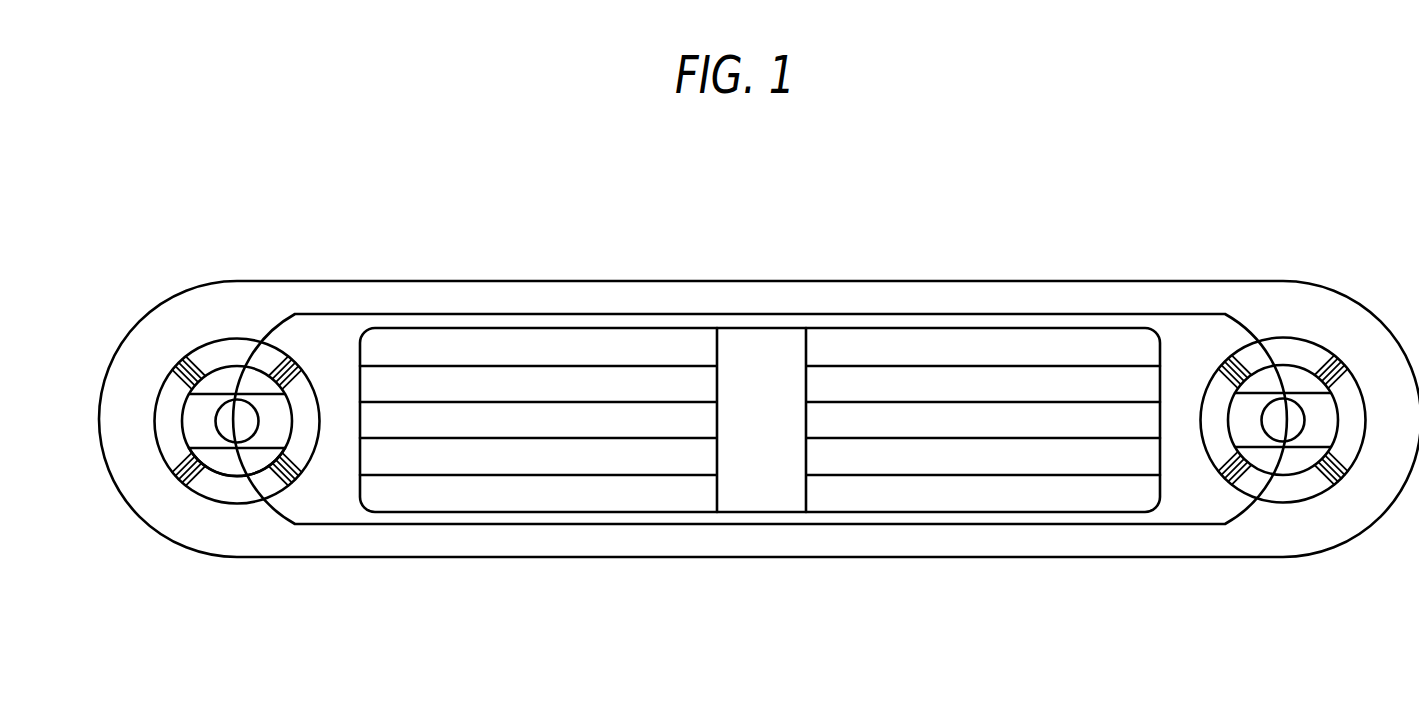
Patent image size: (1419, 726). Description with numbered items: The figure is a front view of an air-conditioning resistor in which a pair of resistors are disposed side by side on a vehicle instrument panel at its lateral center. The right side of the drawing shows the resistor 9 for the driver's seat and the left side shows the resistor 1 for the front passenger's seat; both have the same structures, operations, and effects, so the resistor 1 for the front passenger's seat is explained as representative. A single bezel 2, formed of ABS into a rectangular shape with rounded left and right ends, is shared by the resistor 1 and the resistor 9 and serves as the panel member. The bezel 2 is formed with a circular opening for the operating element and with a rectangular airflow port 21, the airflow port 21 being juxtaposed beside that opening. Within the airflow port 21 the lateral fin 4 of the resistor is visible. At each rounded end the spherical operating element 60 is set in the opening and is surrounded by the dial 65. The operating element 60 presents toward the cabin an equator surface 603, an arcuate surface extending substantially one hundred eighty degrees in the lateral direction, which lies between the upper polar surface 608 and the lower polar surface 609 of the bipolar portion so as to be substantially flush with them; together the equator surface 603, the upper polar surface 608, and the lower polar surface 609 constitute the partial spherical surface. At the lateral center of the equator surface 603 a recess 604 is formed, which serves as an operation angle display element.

The resistor for the front passenger's seat 1 is at (314, 258).
The bezel 2 is at (453, 297).
The lateral fin 4 is at (534, 388).
The resistor for the driver's seat 9 is at (1191, 253).
The airflow port 21 is at (484, 498).
The spherical operating element 60 is at (198, 413).
The dial 65 is at (170, 435).
The equator surface 603 is at (265, 440).
The recess 604 is at (262, 418).
The upper polar surface 608 is at (238, 378).
The lower polar surface 609 is at (238, 462).